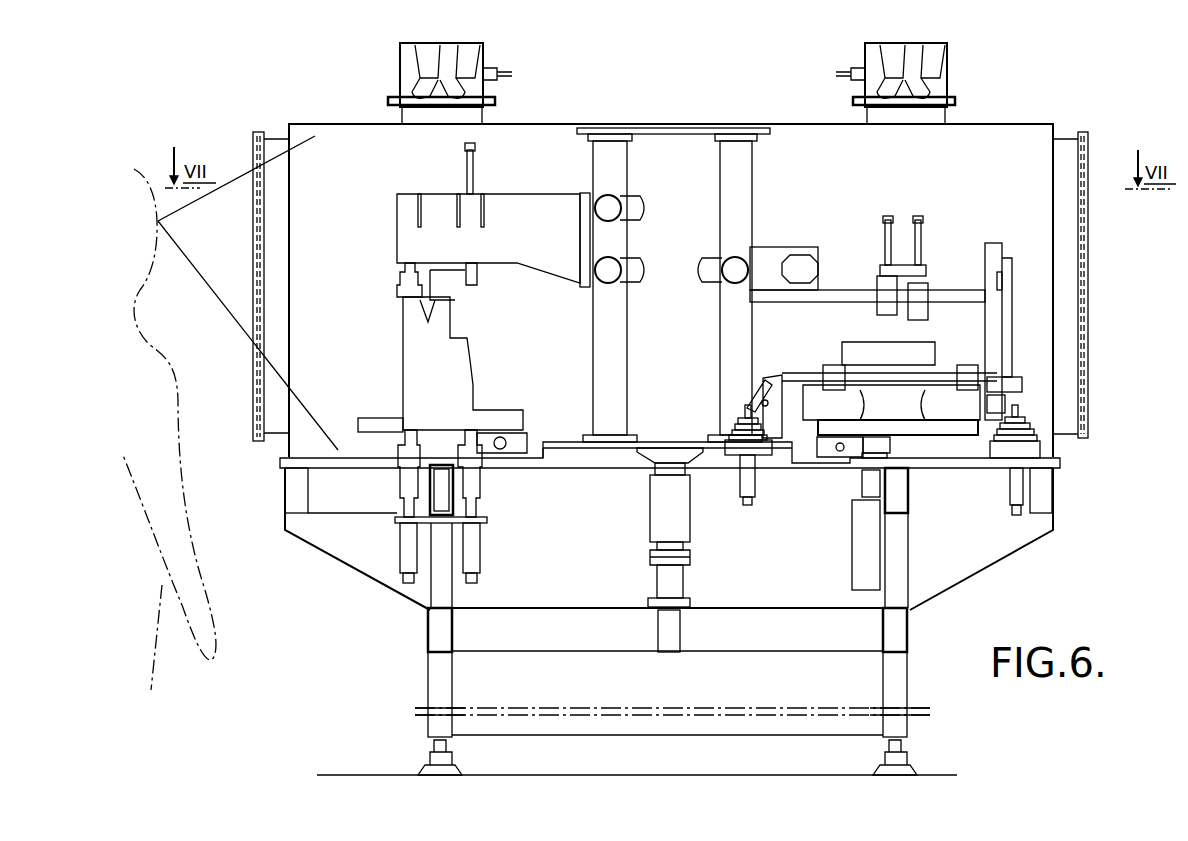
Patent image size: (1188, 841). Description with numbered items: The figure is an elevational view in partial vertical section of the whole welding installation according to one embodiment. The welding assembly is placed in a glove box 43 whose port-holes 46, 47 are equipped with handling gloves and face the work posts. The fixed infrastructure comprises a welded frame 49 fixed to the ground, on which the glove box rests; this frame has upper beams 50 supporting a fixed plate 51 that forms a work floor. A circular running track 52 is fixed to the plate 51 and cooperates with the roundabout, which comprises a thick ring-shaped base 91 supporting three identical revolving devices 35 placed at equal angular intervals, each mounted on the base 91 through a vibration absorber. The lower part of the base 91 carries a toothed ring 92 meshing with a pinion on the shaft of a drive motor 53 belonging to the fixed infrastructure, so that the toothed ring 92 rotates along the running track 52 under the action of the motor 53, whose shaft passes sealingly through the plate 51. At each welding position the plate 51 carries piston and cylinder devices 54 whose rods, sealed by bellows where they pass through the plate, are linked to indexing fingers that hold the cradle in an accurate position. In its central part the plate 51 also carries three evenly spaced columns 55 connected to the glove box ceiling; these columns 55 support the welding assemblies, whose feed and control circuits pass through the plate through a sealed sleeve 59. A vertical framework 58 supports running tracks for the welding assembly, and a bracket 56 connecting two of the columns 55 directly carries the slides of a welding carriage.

The revolving device 35 is at (800, 373).
The glove box 43 is at (372, 586).
The port-hole 46 is at (1085, 325).
The port-hole 47 is at (253, 383).
The welded frame 49 is at (437, 670).
The upper beams 50 is at (284, 497).
The fixed plate 51 is at (543, 463).
The circular running track 52 is at (515, 455).
The drive motor 53 is at (866, 517).
The piston and cylinder devices 54 is at (410, 543).
The columns 55 is at (610, 176).
The bracket 56 is at (510, 213).
The vertical framework 58 is at (1000, 327).
The sealed sleeve 59 is at (677, 517).
The base 91 is at (925, 430).
The toothed ring 92 is at (842, 452).